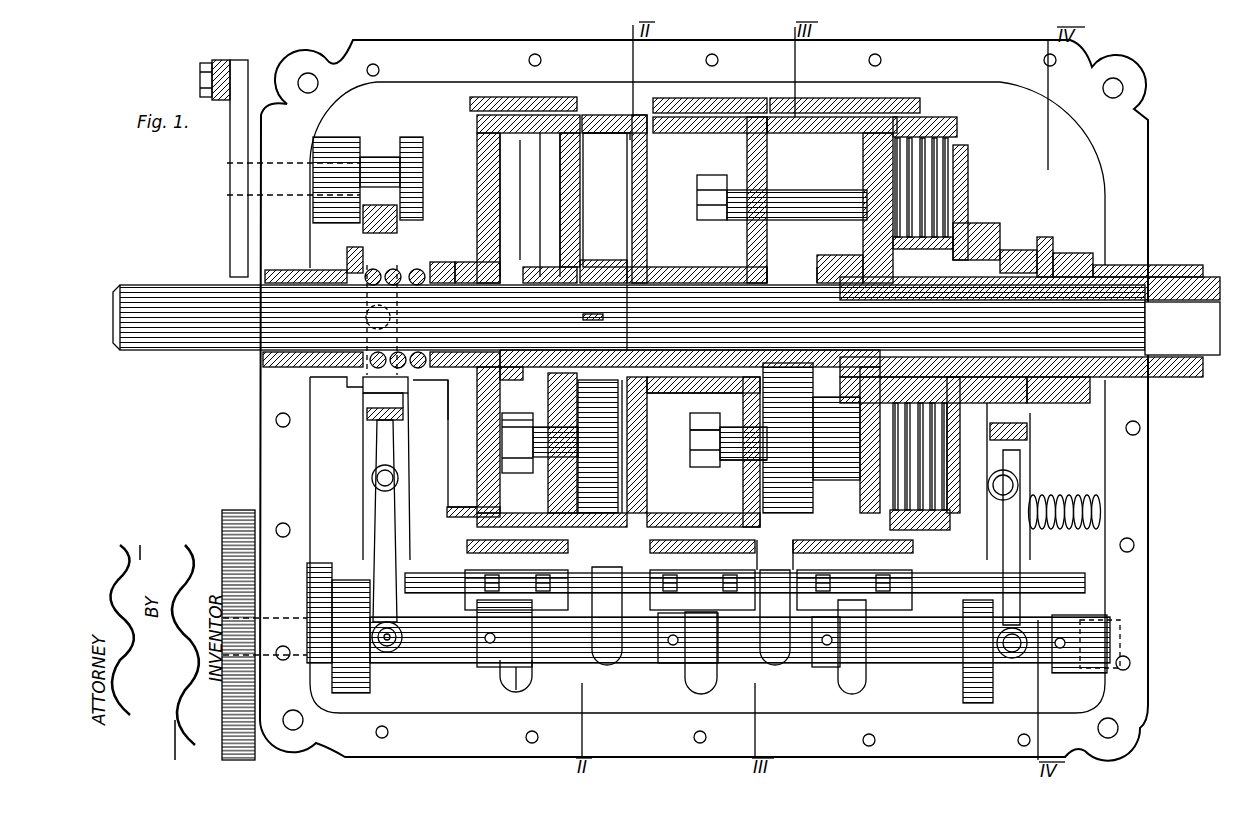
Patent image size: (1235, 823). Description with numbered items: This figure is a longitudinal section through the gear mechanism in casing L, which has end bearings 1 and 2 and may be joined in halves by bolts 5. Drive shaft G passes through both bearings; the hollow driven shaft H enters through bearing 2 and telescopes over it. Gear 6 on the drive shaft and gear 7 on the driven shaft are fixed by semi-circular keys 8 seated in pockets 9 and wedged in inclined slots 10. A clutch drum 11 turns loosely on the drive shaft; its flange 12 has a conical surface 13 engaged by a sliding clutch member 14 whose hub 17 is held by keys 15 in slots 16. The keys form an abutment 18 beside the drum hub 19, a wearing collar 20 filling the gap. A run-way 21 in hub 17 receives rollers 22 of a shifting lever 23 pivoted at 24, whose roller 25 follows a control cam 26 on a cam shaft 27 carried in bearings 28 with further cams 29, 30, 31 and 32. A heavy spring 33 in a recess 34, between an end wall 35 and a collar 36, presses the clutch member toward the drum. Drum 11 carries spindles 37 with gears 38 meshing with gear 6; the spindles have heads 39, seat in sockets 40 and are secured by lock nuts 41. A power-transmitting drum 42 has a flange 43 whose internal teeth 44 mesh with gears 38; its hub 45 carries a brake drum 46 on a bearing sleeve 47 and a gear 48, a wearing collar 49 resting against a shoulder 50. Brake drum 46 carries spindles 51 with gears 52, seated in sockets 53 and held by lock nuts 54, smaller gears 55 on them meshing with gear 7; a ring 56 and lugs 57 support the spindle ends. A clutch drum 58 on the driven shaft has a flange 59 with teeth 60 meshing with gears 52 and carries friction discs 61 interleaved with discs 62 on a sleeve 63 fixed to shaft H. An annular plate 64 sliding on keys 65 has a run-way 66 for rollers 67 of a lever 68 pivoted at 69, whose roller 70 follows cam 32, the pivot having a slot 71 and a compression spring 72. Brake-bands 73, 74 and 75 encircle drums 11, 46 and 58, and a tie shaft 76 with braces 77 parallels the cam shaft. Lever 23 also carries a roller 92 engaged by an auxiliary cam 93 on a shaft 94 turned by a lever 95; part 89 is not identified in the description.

The bearing 1 is at (267, 277).
The bearing 2 is at (1167, 265).
The bolts 5 is at (1130, 545).
The gear 6 is at (590, 263).
The gear 7 is at (823, 253).
The keys 8 is at (605, 283).
The pockets 9 is at (583, 318).
The slots 10 is at (625, 283).
The clutch drum 11 is at (463, 535).
The flange 12 is at (540, 528).
The conical inner surface 13 is at (477, 480).
The clutch member 14 is at (473, 433).
The keys 15 is at (463, 273).
The slots 16 is at (450, 273).
The hub 17 is at (452, 387).
The abutment 18 is at (518, 277).
The hub 19 is at (542, 278).
The wearing collar 20 is at (530, 277).
The annular run-way 21 is at (367, 398).
The lugs or rollers 22 is at (366, 310).
The clutch shifting lever 23 is at (363, 453).
The pivot 24 is at (377, 477).
The lug or roller 25 is at (373, 660).
The control cam 26 is at (357, 667).
The cam shaft 27 is at (463, 660).
The bearings 28 is at (297, 667).
The cam 29 is at (517, 640).
The cam 30 is at (703, 647).
The cam 31 is at (845, 650).
The cam 32 is at (997, 700).
The spring 33 is at (347, 267).
The recess 34 is at (420, 270).
The annular end wall 35 is at (402, 385).
The collar 36 is at (360, 392).
The spindles 37 is at (540, 443).
The gears 38 is at (610, 482).
The heads 39 is at (623, 437).
The sockets 40 is at (473, 473).
The lock nuts 41 is at (518, 427).
The power-transmitting drum 42 is at (643, 117).
The annular flange 43 is at (598, 133).
The teeth 44 is at (590, 117).
The hub 45 is at (680, 267).
The brake drum 46 is at (743, 490).
The bearing sleeve 47 is at (665, 385).
The gear 48 is at (782, 280).
The wearing collar 49 is at (697, 380).
The annular shoulder 50 is at (633, 310).
The spindles 51 is at (727, 457).
The gears 52 is at (793, 477).
The sockets 53 is at (757, 470).
The lock nuts 54 is at (713, 430).
The smaller gears 55 is at (847, 467).
The ring 56 is at (867, 182).
The lugs 57 is at (778, 200).
The clutch drum 58 is at (907, 533).
The annular flange 59 is at (775, 554).
The teeth 60 is at (782, 118).
The friction discs 61 is at (947, 133).
The friction discs 62 is at (960, 253).
The sleeve 63 is at (1003, 240).
The annular plate 64 is at (967, 143).
The keys 65 is at (1033, 233).
The annular run-way 66 is at (1033, 417).
The lugs or rollers 67 is at (1147, 317).
The clutch-shifting lever 68 is at (1020, 548).
The pivot 69 is at (990, 493).
The lug or roller 70 is at (1012, 667).
The slot 71 is at (997, 490).
The compression spring 72 is at (1067, 497).
The brake-band 73 is at (467, 550).
The brake-band 74 is at (650, 553).
The brake-band 75 is at (910, 553).
The tie shaft 76 is at (465, 600).
The braces 77 is at (610, 640).
The lever pivot 89 is at (385, 655).
The lug or roller 92 is at (363, 217).
The auxiliary control cam 93 is at (402, 170).
The shaft 94 is at (378, 170).
The lever 95 is at (240, 80).